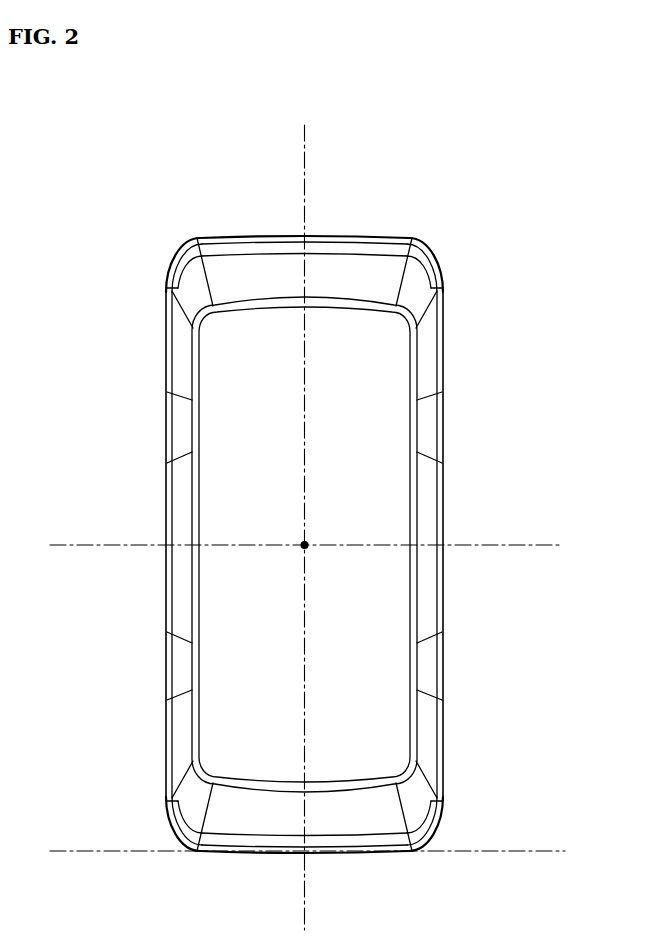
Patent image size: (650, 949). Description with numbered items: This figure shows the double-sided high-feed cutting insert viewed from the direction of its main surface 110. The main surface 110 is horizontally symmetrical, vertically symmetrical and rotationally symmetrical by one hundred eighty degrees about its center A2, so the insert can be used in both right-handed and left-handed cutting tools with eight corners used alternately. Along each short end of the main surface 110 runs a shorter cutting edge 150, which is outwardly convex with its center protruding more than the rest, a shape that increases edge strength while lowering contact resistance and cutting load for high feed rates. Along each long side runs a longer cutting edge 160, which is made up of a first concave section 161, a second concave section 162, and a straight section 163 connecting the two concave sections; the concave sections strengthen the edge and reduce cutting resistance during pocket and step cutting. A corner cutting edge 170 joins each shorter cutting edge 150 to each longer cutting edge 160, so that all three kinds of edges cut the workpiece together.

The main surface 110 is at (371, 401).
The shorter cutting edge 150 is at (384, 238).
The longer cutting edge 160 is at (165, 598).
The first concave section 161 is at (165, 341).
The second concave section 162 is at (165, 736).
The straight section 163 is at (165, 510).
The corner cutting edge 170 is at (176, 241).
The center of the main surface A2 is at (308, 543).